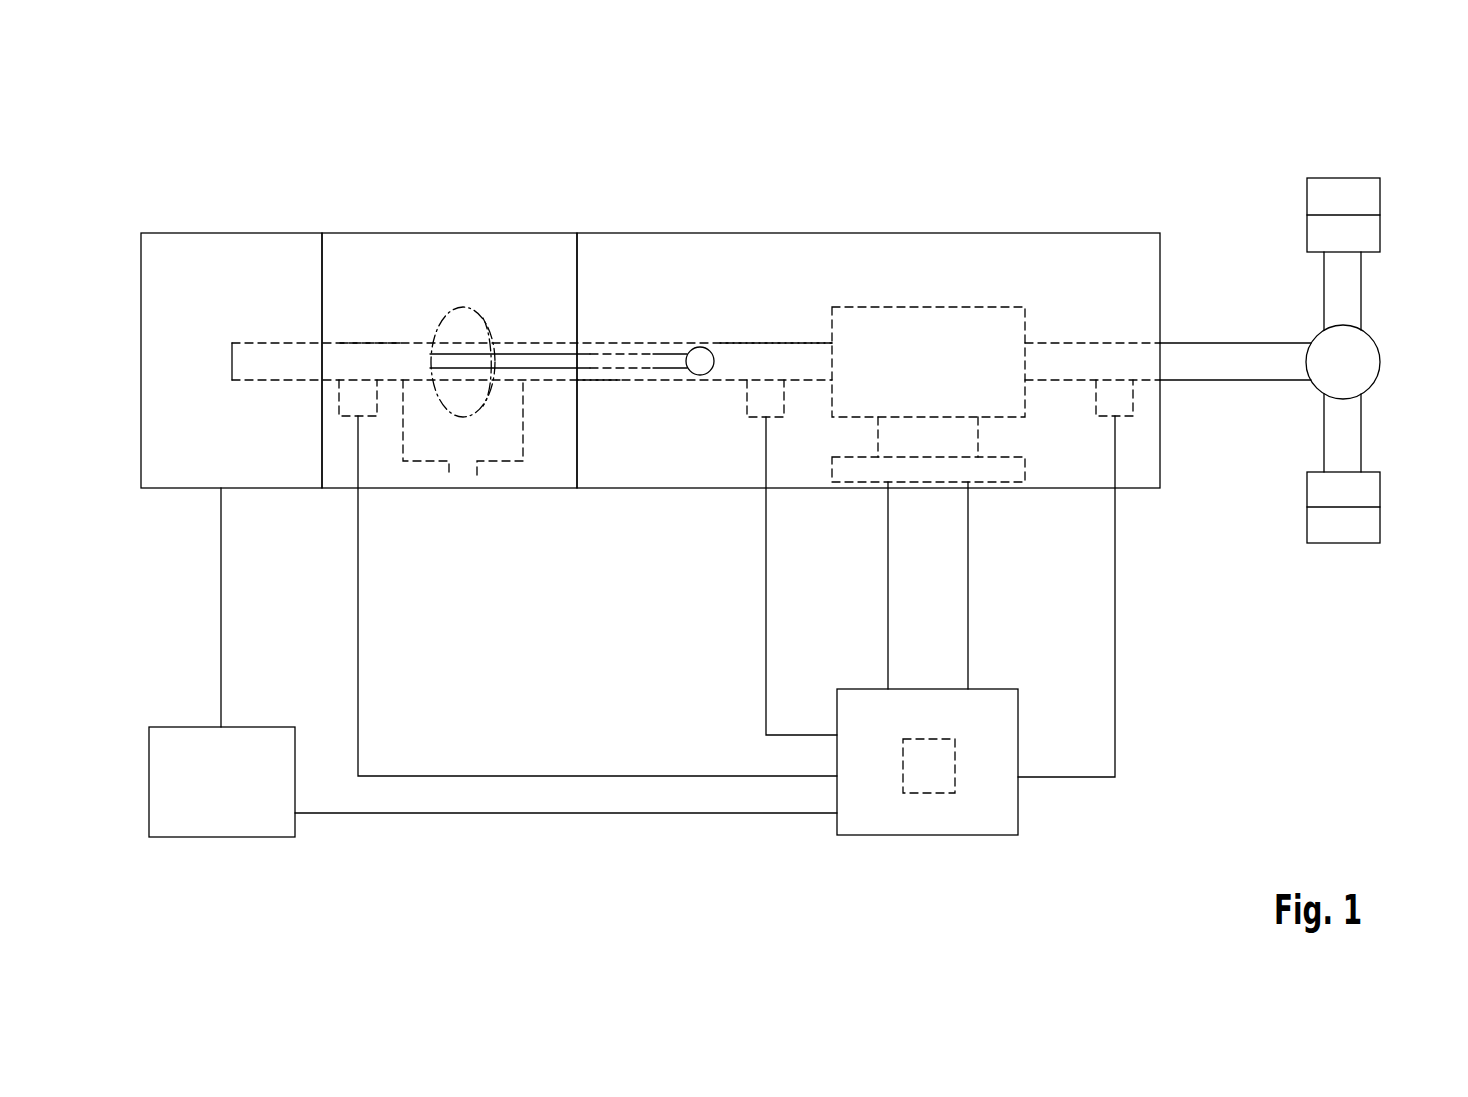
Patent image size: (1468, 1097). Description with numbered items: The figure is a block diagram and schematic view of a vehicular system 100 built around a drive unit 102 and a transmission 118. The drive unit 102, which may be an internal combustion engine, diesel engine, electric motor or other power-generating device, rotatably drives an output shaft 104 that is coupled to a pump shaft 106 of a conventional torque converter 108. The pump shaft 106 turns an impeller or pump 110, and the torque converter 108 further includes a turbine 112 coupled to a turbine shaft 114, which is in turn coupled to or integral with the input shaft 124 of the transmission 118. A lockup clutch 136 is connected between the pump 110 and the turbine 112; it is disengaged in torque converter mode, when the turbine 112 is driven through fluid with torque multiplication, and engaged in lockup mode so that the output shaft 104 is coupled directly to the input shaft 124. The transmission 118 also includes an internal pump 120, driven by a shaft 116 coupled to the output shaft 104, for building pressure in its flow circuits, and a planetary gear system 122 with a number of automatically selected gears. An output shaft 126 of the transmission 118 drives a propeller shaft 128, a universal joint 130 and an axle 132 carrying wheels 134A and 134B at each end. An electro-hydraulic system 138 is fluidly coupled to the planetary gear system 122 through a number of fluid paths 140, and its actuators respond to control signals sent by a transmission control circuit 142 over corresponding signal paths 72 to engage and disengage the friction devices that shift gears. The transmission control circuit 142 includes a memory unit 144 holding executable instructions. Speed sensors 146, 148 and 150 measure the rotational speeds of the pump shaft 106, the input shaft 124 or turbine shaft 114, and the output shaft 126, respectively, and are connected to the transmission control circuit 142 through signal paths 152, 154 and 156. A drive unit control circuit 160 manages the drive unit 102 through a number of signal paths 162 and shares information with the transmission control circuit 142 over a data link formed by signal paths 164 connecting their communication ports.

The vehicular system 100 is at (181, 156).
The drive unit 102 is at (262, 233).
The output shaft 104 is at (273, 342).
The pump shaft 106 is at (368, 343).
The torque converter 108 is at (457, 233).
The pump 110 is at (440, 307).
The turbine 112 is at (490, 318).
The turbine shaft 114 is at (545, 343).
The shaft 116 is at (590, 380).
The transmission 118 is at (867, 233).
The internal pump 120 is at (700, 346).
The planetary gear system 122 is at (957, 377).
The input shaft 124 is at (775, 343).
The output shaft 126 is at (1088, 343).
The propeller shaft 128 is at (1233, 343).
The universal joint 130 is at (1372, 380).
The axle 132 is at (1362, 295).
The wheel 134A is at (1343, 178).
The wheel 134B is at (1342, 544).
The lockup clutch 136 is at (485, 473).
The electro-hydraulic system 138 is at (994, 468).
The fluid paths 140 is at (1142, 519).
The transmission control circuit 142 is at (897, 835).
The memory unit 144 is at (938, 793).
The speed sensor 146 is at (335, 398).
The speed sensor 148 is at (753, 399).
The speed sensor 150 is at (1138, 395).
The signal path 152 is at (521, 776).
The signal path 154 is at (766, 619).
The signal path 156 is at (1115, 655).
The drive unit control circuit 160 is at (212, 837).
The signal paths 162 is at (221, 543).
The signal paths 164 is at (477, 813).
The signal paths 72 is at (886, 548).